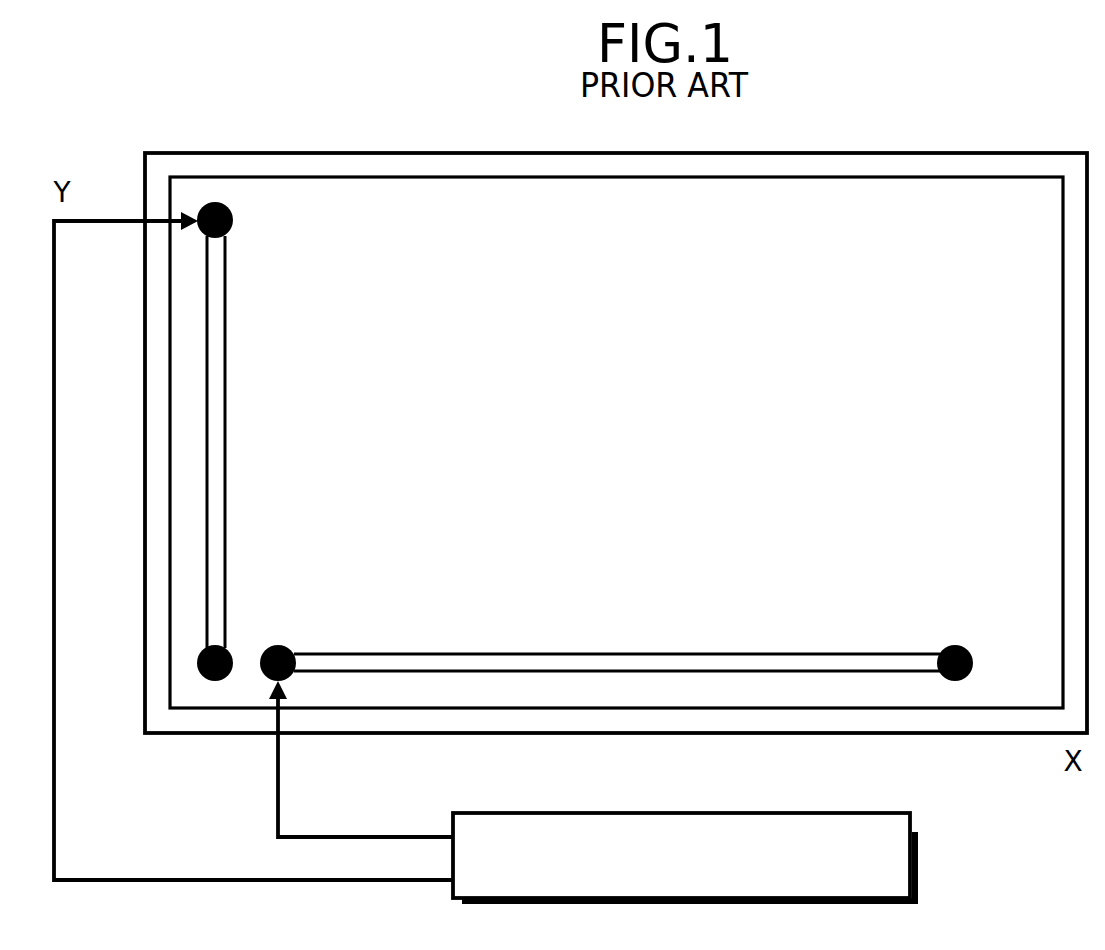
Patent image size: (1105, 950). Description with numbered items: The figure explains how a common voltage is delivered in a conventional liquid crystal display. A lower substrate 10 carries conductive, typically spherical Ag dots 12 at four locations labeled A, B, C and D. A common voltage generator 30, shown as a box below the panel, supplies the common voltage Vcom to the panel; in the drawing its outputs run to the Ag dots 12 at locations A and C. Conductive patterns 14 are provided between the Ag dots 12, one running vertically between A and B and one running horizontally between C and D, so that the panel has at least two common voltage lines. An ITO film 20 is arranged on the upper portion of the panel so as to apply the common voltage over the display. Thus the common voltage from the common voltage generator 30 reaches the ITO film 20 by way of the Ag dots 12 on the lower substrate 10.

The lower substrate 10 is at (960, 152).
The Ag dots 12 is at (234, 220).
The conductive patterns 14 is at (225, 372).
The ITO film 20 is at (931, 558).
The common voltage generator 30 is at (600, 812).